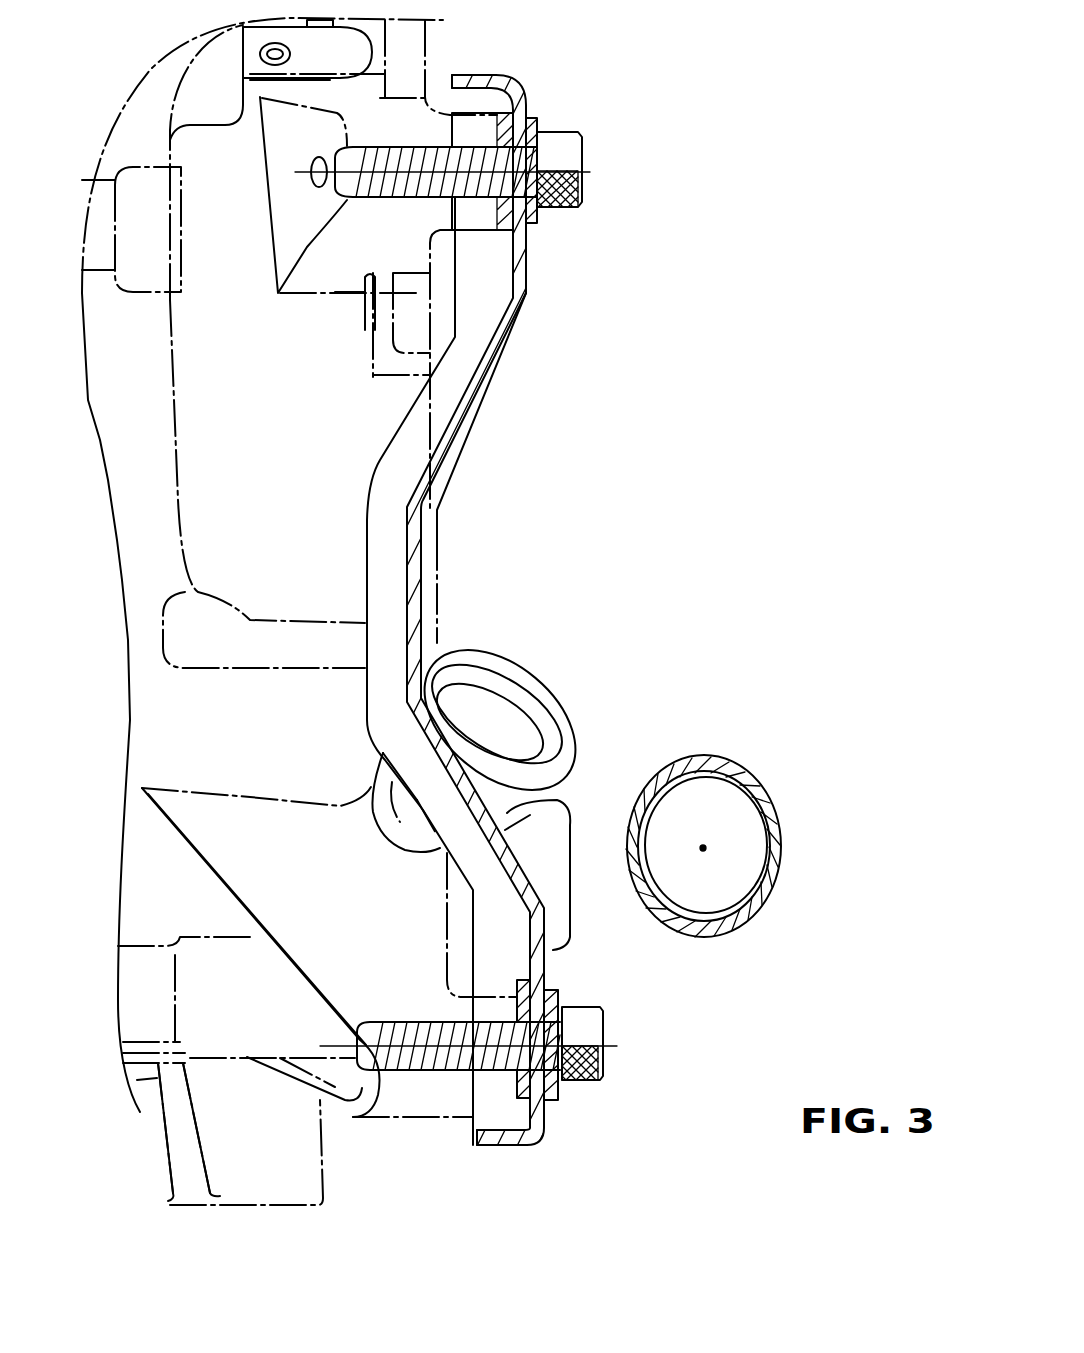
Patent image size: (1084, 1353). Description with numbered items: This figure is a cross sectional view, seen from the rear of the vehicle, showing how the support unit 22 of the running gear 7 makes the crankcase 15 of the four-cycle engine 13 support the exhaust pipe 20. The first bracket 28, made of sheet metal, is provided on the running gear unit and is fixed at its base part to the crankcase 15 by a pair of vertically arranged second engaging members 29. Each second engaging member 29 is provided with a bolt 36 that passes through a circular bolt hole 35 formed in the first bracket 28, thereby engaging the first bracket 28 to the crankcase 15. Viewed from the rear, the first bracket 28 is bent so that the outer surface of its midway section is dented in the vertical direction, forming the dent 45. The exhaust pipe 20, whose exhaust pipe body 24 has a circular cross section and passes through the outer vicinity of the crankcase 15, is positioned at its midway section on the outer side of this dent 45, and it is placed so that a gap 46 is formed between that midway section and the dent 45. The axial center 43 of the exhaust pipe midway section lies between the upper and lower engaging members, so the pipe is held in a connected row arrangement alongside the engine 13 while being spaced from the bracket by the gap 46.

The running gear 7 is at (620, 85).
The four-cycle engine 13 is at (438, 522).
The crankcase 15 is at (440, 567).
The exhaust pipe 20 is at (671, 759).
The support unit 22 is at (572, 345).
The exhaust pipe body 24 is at (713, 758).
The first bracket 28 is at (474, 405).
The second engaging members 29 is at (583, 140).
The circular bolt hole 35 is at (584, 192).
The bolt 36 is at (556, 209).
The axial center 43 is at (700, 848).
The dent 45 is at (437, 605).
The gap 46 is at (598, 875).